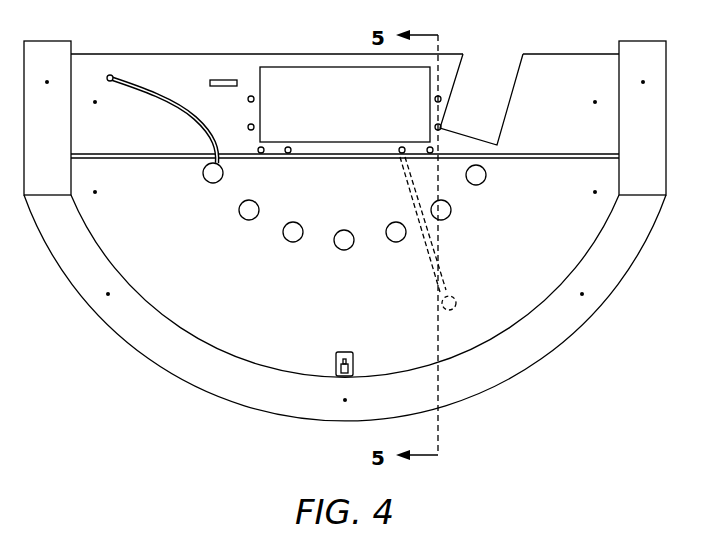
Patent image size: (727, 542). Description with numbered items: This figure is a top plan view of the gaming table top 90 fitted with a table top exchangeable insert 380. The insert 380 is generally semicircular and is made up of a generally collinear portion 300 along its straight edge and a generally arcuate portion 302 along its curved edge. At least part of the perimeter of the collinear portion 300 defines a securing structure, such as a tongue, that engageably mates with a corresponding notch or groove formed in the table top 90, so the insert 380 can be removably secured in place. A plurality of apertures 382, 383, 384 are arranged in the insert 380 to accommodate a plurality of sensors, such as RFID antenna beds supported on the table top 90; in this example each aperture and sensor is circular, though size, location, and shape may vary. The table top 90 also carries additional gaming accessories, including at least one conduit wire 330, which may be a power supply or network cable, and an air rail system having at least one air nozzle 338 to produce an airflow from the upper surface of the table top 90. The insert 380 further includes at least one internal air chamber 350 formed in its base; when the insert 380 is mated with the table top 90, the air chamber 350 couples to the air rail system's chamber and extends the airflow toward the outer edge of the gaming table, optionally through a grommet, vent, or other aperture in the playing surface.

The table top 90 is at (630, 257).
The collinear portion 300 is at (460, 156).
The arcuate portion 302 is at (465, 353).
The conduit wire 330 is at (145, 88).
The air nozzle 338 is at (251, 96).
The internal air chamber 350 is at (450, 295).
The table top exchangeable insert 380 is at (163, 295).
The aperture 382 is at (206, 178).
The aperture 383 is at (251, 210).
The aperture 384 is at (344, 245).